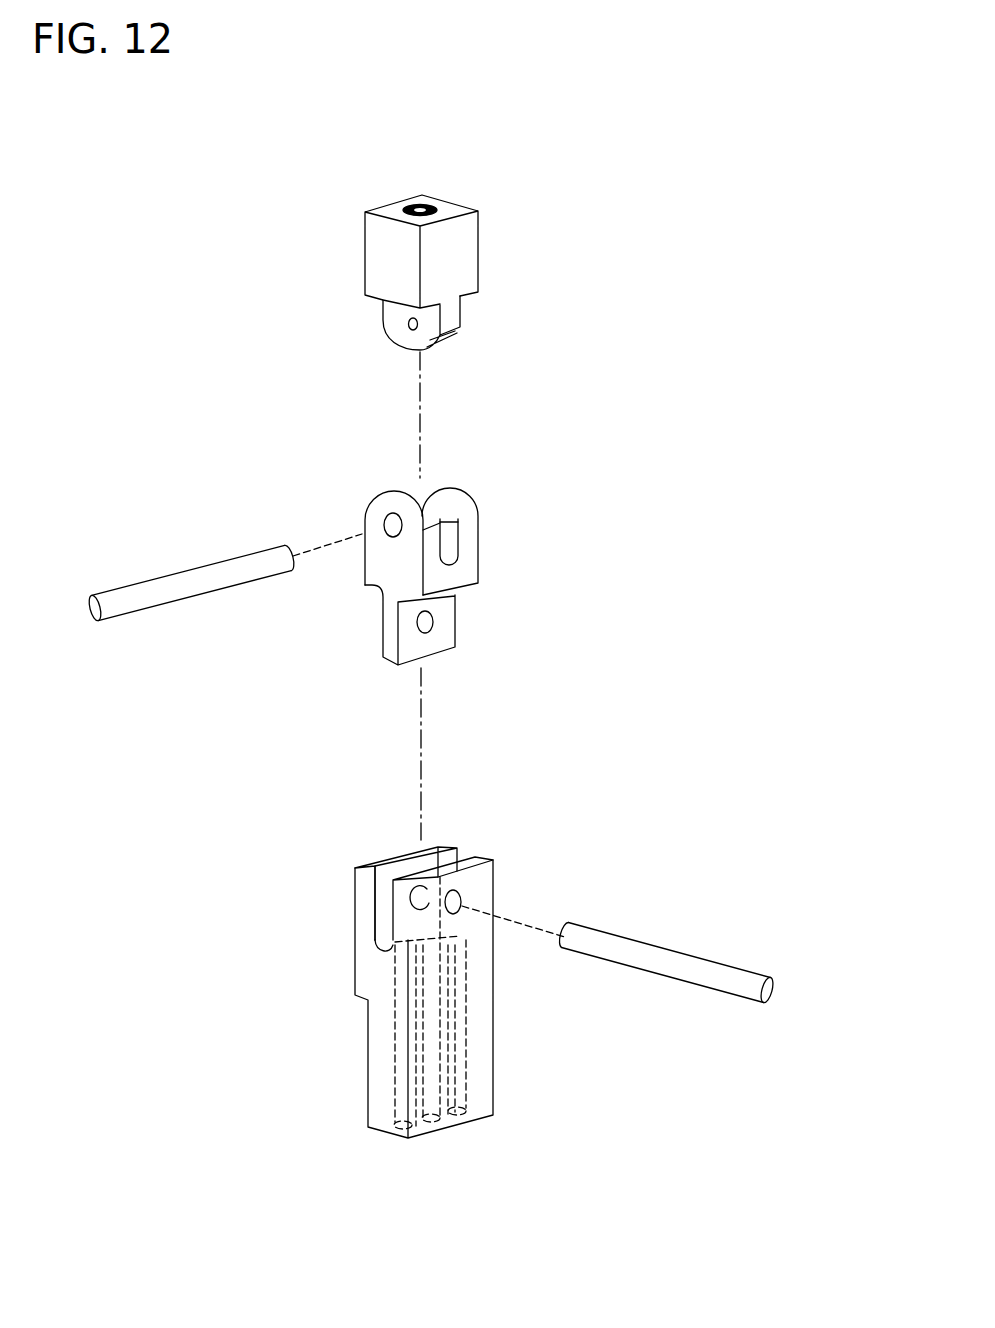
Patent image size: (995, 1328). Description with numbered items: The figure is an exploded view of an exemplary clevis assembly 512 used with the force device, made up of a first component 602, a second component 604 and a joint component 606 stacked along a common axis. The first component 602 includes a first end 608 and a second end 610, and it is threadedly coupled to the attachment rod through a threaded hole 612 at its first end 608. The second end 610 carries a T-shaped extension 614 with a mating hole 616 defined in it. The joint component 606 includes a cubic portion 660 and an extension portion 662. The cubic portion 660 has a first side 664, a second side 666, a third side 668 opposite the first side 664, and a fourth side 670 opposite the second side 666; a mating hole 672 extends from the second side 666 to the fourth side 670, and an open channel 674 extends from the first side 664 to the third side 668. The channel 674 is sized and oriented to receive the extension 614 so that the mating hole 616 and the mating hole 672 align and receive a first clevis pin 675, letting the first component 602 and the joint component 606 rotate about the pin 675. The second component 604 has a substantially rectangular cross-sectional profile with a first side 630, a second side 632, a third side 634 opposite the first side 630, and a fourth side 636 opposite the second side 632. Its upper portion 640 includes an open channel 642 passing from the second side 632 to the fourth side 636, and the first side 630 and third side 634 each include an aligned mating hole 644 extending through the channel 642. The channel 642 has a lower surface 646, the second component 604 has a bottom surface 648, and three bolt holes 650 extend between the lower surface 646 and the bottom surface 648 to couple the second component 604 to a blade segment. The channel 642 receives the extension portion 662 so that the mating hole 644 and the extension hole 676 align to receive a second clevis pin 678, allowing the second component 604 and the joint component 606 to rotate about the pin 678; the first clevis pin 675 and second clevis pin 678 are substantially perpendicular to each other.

The clevis assembly 512 is at (698, 178).
The first component 602 is at (260, 205).
The second component 604 is at (202, 1048).
The joint component 606 is at (645, 570).
The first end 608 is at (462, 198).
The second end 610 is at (470, 343).
The threaded hole 612 is at (423, 207).
The T-shaped extension 614 is at (360, 320).
The mating hole 616 is at (405, 330).
The first side 630 is at (480, 1065).
The second side 632 is at (385, 1040).
The third side 634 is at (362, 930).
The fourth side 636 is at (485, 1028).
The upper portion 640 is at (340, 887).
The open channel 642 is at (467, 857).
The mating hole 644 is at (457, 897).
The lower surface 646 is at (370, 940).
The bottom surface 648 is at (405, 1140).
The bolt holes 650 is at (440, 1130).
The cubic portion 660 is at (525, 505).
The extension portion 662 is at (480, 633).
The first side 664 is at (462, 570).
The second side 666 is at (370, 575).
The third side 668 is at (358, 524).
The fourth side 670 is at (485, 542).
The mating hole 672 is at (388, 518).
The open channel 674 is at (448, 512).
The first clevis pin 675 is at (170, 575).
The hole 676 is at (430, 625).
The second clevis pin 678 is at (698, 962).